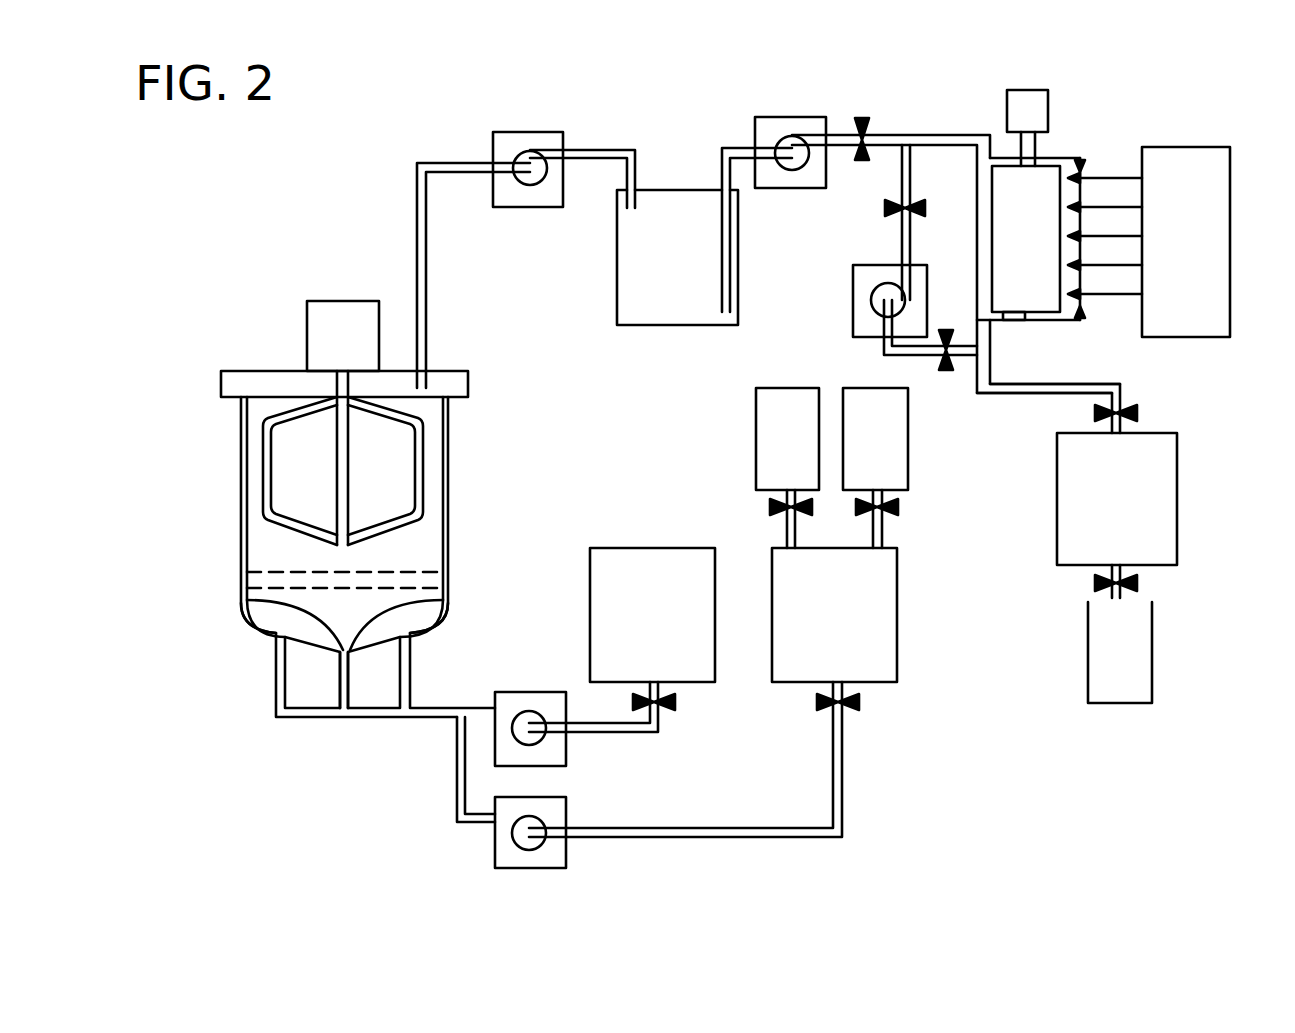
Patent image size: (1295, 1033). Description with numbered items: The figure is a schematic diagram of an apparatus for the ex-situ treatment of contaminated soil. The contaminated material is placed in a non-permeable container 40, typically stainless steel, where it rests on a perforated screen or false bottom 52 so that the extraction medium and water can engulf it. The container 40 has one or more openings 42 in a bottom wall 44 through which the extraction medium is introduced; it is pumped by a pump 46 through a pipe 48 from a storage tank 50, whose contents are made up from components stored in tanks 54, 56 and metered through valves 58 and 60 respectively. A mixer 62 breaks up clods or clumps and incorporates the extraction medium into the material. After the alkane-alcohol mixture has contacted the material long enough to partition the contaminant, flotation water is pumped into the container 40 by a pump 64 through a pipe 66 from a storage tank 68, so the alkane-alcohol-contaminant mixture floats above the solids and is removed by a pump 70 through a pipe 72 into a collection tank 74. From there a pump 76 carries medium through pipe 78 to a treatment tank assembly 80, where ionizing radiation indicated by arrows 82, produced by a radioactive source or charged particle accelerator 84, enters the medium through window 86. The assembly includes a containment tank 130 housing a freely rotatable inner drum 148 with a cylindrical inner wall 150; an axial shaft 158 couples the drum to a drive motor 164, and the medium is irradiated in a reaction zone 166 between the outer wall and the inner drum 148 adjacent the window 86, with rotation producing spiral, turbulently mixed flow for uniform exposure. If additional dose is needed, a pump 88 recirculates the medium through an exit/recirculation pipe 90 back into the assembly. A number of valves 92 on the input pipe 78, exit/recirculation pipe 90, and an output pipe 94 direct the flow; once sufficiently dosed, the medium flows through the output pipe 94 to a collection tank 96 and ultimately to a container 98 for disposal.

The non-permeable container 40 is at (240, 540).
The openings 42 is at (262, 617).
The bottom wall 44 is at (443, 608).
The pump 46 is at (567, 850).
The pipe 48 is at (342, 712).
The storage tank 50 is at (897, 633).
The perforated screen or false bottom 52 is at (402, 573).
The tank 54 is at (908, 433).
The tank 56 is at (755, 410).
The valve 58 is at (898, 507).
The valve 60 is at (768, 507).
The mixer 62 is at (263, 460).
The pump 64 is at (520, 692).
The pipe 66 is at (627, 733).
The storage tank 68 is at (627, 548).
The pump 70 is at (538, 132).
The pipe 72 is at (417, 225).
The collection tank 74 is at (617, 277).
The pump 76 is at (780, 117).
The pipe 78 is at (840, 134).
The treatment tank assembly 80 is at (1068, 157).
The ionizing radiation 82 is at (1118, 177).
The radioactive source or charged particle accelerator 84 is at (1205, 148).
The window 86 is at (1083, 305).
The pump 88 is at (853, 298).
The exit/recirculation pipe 90 is at (889, 218).
The valves 92 is at (1193, 403).
The output pipe 94 is at (1038, 395).
The collection tank 96 is at (1177, 507).
The container 98 is at (1152, 645).
The containment tank 130 is at (965, 232).
The inner drum 148 is at (980, 265).
The inner wall 150 is at (1010, 293).
The axial shaft 158 is at (1040, 143).
The drive motor 164 is at (1025, 90).
The reaction zone 166 is at (1065, 318).